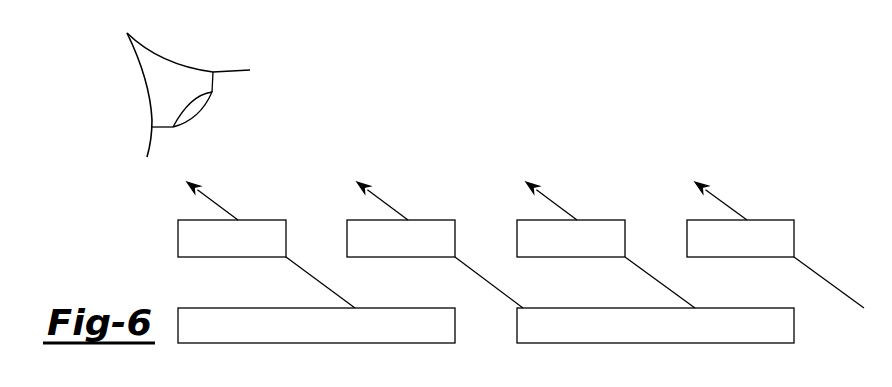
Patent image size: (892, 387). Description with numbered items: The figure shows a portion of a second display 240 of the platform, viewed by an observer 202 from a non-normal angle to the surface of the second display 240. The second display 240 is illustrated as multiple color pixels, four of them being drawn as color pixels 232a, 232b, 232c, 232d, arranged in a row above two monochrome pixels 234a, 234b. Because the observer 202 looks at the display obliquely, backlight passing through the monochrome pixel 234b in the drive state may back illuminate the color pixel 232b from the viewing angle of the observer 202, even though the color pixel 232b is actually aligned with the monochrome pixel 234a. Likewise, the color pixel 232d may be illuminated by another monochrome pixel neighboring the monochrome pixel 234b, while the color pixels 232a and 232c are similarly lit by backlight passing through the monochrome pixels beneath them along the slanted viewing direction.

The observer 202 is at (145, 72).
The second display 240 is at (746, 109).
The color pixel 232a is at (266, 245).
The color pixel 232b is at (435, 245).
The color pixel 232c is at (606, 245).
The color pixel 232d is at (775, 245).
The monochrome pixel 234a is at (316, 325).
The monochrome pixel 234b is at (655, 325).